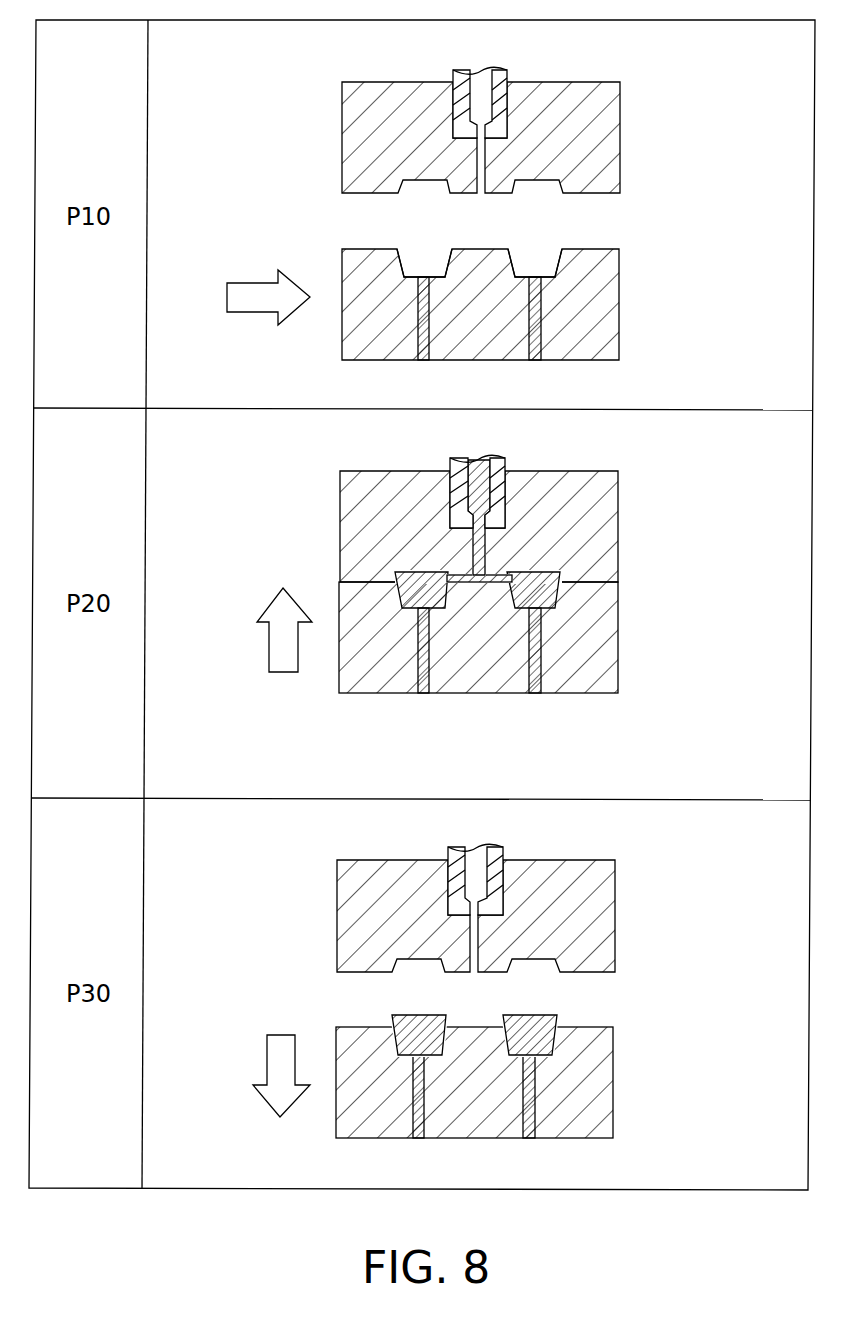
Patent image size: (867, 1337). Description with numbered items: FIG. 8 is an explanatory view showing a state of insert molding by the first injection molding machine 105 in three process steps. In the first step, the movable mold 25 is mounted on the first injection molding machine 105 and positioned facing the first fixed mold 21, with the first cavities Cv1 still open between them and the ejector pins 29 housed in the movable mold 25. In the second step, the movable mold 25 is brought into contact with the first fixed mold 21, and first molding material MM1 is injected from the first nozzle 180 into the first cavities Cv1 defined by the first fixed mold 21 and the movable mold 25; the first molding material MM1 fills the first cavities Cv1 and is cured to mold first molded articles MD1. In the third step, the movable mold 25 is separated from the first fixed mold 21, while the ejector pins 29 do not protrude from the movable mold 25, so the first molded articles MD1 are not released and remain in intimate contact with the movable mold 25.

The first injection molding machine 105 is at (265, 78).
The first nozzle 180 is at (458, 108).
The first fixed mold 21 is at (620, 142).
The movable mold 25 is at (619, 300).
The ejector pins 29 is at (541, 345).
The first cavities Cv1 is at (425, 250).
The first molding material MM1 is at (482, 505).
The first molded articles MD1 is at (418, 1015).